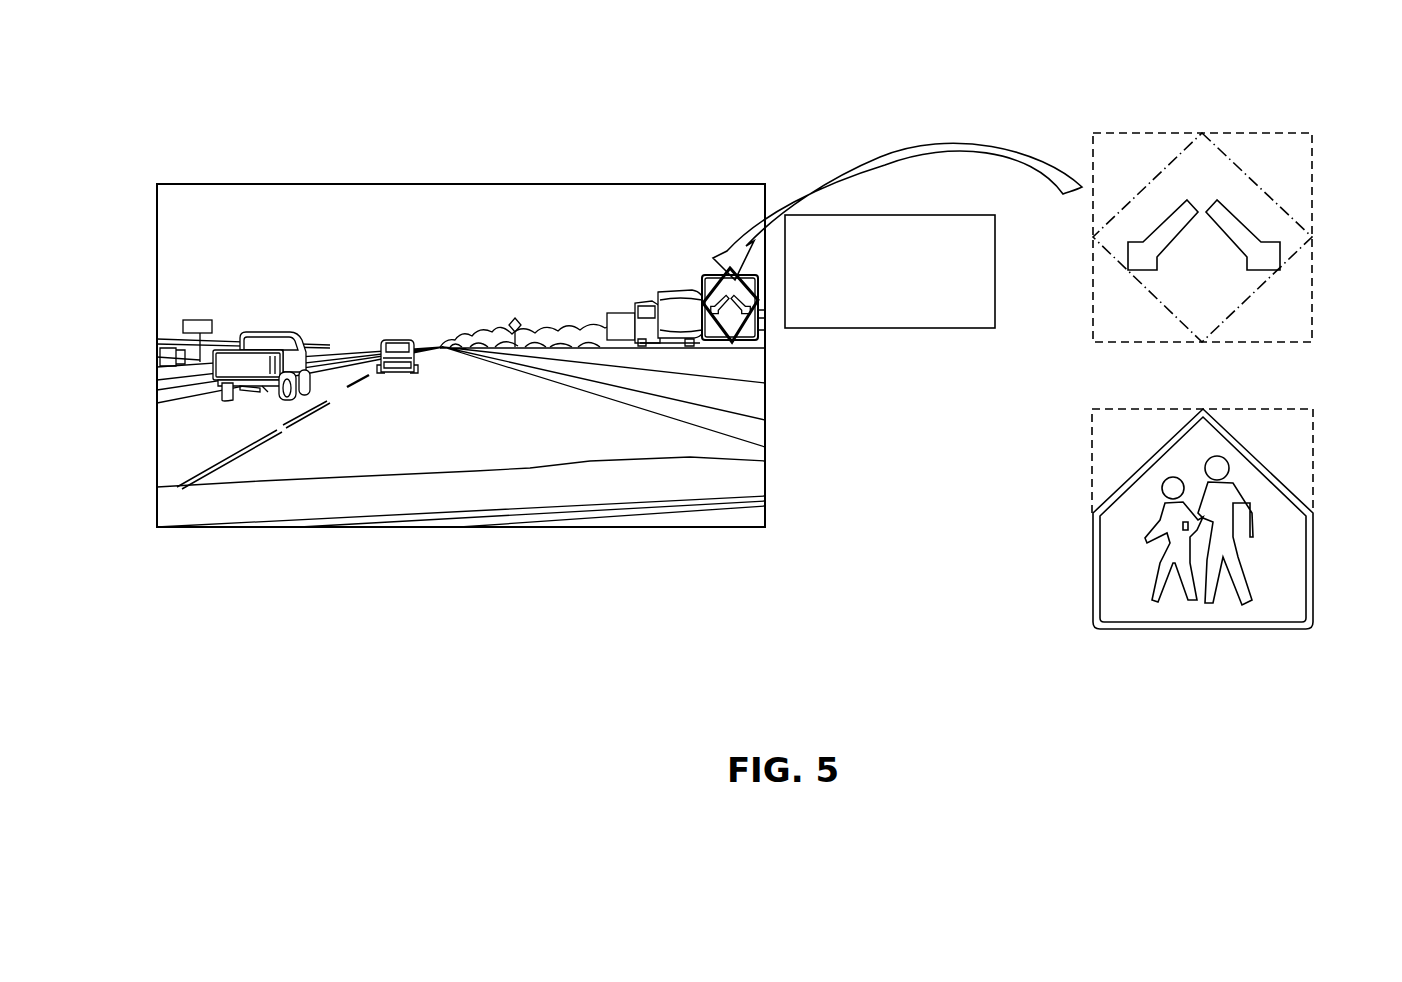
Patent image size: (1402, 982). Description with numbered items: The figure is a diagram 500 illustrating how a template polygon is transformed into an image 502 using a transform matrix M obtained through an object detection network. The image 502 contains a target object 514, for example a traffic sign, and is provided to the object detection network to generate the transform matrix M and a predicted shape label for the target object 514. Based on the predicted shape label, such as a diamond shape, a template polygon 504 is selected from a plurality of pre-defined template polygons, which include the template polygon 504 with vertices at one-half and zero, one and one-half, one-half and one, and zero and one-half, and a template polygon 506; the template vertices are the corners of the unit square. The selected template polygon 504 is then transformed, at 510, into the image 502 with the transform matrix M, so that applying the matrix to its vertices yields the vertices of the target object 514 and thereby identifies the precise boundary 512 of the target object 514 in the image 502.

The diagram 500 is at (226, 60).
The image 502 is at (701, 184).
The template polygon 504 is at (1246, 171).
The template polygon 506 is at (1252, 453).
The transforming 510 is at (968, 141).
The precise boundary 512 is at (759, 337).
The target object 514 is at (722, 340).